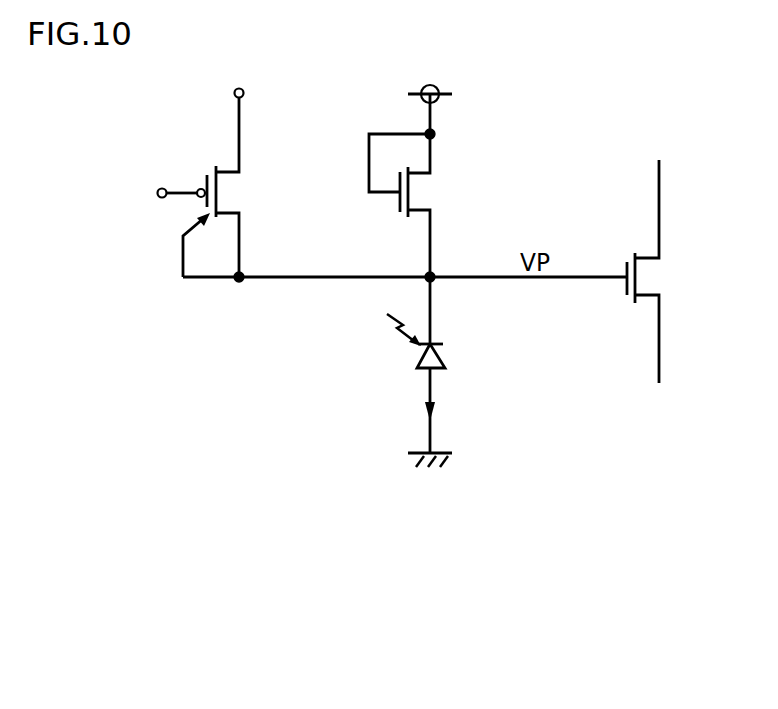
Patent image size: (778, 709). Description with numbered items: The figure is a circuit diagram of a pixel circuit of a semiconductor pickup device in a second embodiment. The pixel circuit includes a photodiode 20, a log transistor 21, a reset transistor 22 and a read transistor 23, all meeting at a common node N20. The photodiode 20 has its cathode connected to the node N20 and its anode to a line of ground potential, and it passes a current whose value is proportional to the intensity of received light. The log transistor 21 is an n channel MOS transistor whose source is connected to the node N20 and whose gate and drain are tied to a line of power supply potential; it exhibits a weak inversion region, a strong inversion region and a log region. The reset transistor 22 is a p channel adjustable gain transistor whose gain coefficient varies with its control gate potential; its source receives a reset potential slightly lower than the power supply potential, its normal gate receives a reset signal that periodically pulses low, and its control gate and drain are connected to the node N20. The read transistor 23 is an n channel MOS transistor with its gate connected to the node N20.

The photodiode 20 is at (445, 358).
The log transistor 21 is at (422, 212).
The reset transistor 22 is at (228, 170).
The read transistor 23 is at (650, 257).
The node N20 is at (433, 282).